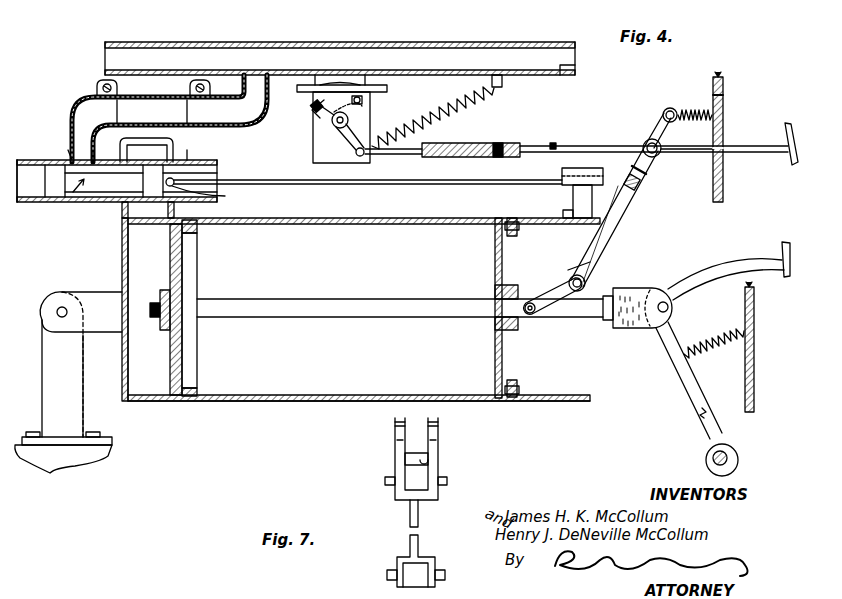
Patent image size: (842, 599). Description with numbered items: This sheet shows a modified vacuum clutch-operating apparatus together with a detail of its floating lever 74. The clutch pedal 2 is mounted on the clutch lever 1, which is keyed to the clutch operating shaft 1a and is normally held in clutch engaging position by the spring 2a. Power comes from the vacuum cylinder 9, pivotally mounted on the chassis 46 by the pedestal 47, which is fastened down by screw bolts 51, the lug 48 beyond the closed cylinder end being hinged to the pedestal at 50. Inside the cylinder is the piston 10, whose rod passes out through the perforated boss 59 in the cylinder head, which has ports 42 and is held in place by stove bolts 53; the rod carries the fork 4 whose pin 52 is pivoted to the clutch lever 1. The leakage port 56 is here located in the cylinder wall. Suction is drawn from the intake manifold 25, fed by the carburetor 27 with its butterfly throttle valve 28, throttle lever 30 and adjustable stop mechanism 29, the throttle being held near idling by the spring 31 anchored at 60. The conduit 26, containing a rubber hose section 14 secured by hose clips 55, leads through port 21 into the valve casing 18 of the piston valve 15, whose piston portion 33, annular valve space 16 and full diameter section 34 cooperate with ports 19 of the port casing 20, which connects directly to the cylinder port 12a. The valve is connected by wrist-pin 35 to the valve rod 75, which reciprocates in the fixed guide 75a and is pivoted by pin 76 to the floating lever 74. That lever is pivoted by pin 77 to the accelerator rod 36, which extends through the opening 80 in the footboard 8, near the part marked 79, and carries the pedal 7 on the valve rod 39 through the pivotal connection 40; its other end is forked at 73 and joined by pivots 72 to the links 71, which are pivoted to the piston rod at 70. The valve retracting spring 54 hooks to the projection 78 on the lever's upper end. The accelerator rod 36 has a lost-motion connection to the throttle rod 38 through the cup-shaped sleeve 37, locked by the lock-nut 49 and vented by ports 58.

In FIG. 4, the clutch lever 1 is at (680, 395).
In FIG. 4, the clutch operating shaft 1a is at (728, 456).
In FIG. 4, the clutch pedal 2 is at (785, 242).
In FIG. 4, the spring 2a is at (702, 364).
In FIG. 4, the fork 4 is at (636, 332).
In FIG. 4, the pedal 7 is at (788, 122).
In FIG. 4, the footboard 8 is at (723, 122).
In FIG. 4, the vacuum cylinder 9 is at (314, 218).
In FIG. 4, the piston 10 is at (183, 352).
In FIG. 4, the port 12a is at (132, 228).
In FIG. 4, the rubber hose section 14 is at (142, 100).
In FIG. 4, the piston valve 15 is at (70, 204).
In FIG. 4, the annular valve space 16 is at (118, 204).
In FIG. 4, the valve casing 18 is at (30, 158).
In FIG. 4, the ports 19 is at (120, 154).
In FIG. 4, the port casing 20 is at (210, 145).
In FIG. 4, the port 21 is at (69, 157).
In FIG. 4, the intake manifold 25 is at (228, 42).
In FIG. 4, the conduit 26 is at (244, 124).
In FIG. 4, the carburetor 27 is at (312, 150).
In FIG. 4, the throttle valve 28 is at (360, 122).
In FIG. 4, the adjustable stop mechanism 29 is at (363, 100).
In FIG. 4, the throttle lever 30 is at (348, 142).
In FIG. 4, the spring 31 is at (440, 114).
In FIG. 4, the piston portion 33 is at (46, 182).
In FIG. 4, the full diameter section 34 is at (174, 153).
In FIG. 4, the wrist-pin 35 is at (205, 197).
In FIG. 4, the accelerator rod 36 is at (590, 146).
In FIG. 4, the cup-shaped sleeve 37 is at (456, 157).
In FIG. 4, the throttle rod 38 is at (398, 156).
In FIG. 4, the valve rod 39 is at (673, 152).
In FIG. 4, the pivotal connection 40 is at (636, 160).
In FIG. 4, the ports 42 is at (502, 258).
In FIG. 4, the chassis 46 is at (77, 462).
In FIG. 4, the pedestal 47 is at (52, 348).
In FIG. 4, the lug 48 is at (93, 292).
In FIG. 4, the lock-nut 49 is at (553, 143).
In FIG. 4, the hinge 50 is at (62, 307).
In FIG. 4, the screw bolts 51 is at (30, 432).
In FIG. 4, the pin 52 is at (669, 306).
In FIG. 4, the stove bolts 53 is at (508, 210).
In FIG. 4, the valve retracting spring 54 is at (680, 110).
In FIG. 4, the hose clips 55 is at (97, 84).
In FIG. 4, the leakage port 56 is at (330, 404).
In FIG. 4, the ports 58 is at (497, 143).
In FIG. 4, the perforated boss 59 is at (495, 284).
In FIG. 4, the anchor 60 is at (503, 84).
In FIG. 4, the pivot 70 is at (533, 314).
In FIG. 4, the links 71 is at (556, 288).
In FIG. 4, the pivots 72 is at (588, 280).
In FIG. 7, the pivots 72 is at (386, 574).
In FIG. 4, the fork 73 is at (581, 266).
In FIG. 4, the floating lever 74 is at (622, 243).
In FIG. 7, the floating lever 74 is at (420, 516).
In FIG. 4, the valve rod 75 is at (358, 186).
In FIG. 4, the fixed guide 75a is at (566, 188).
In FIG. 4, the pin 76 is at (640, 200).
In FIG. 7, the pin 76 is at (386, 480).
In FIG. 4, the pin 77 is at (648, 142).
In FIG. 7, the pin 77 is at (430, 465).
In FIG. 4, the projection 78 is at (663, 113).
In FIG. 7, the projection 78 is at (440, 430).
In FIG. 4, the opening 79 is at (720, 95).
In FIG. 4, the opening 80 is at (726, 153).